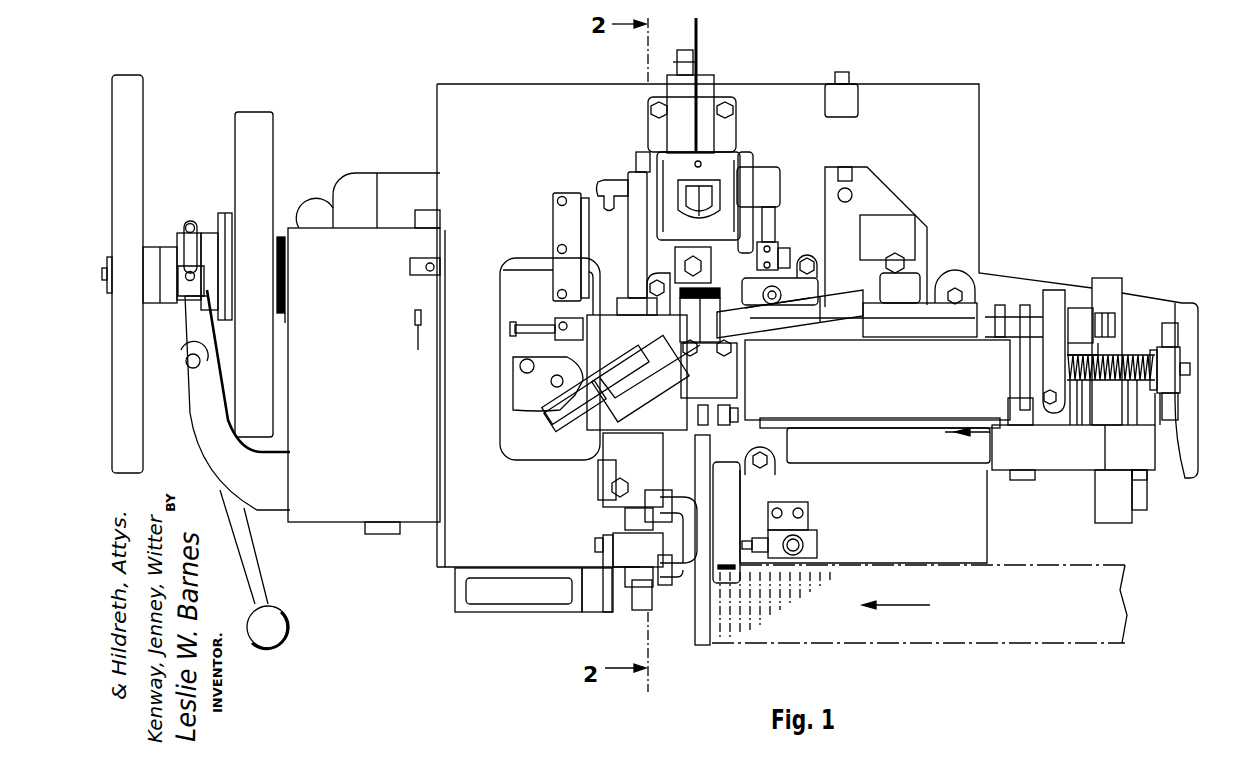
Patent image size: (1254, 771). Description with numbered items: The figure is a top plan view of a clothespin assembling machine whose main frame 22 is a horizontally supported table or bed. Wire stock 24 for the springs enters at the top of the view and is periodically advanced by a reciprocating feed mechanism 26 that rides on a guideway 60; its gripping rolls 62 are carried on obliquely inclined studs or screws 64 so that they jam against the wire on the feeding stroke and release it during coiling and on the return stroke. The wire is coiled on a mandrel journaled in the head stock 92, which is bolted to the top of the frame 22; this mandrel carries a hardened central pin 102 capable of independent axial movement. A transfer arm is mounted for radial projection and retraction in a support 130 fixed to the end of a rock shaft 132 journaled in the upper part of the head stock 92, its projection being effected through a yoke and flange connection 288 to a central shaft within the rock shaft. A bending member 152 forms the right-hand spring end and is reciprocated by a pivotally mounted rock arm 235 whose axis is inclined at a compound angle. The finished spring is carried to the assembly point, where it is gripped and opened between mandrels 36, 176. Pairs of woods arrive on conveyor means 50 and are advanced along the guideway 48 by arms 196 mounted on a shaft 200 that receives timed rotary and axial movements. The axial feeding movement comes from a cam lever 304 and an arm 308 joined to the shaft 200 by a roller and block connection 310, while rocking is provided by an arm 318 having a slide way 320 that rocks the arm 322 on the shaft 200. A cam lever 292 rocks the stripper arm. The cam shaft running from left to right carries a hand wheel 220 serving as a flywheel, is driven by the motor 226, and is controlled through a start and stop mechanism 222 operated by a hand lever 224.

The main frame 22 is at (922, 107).
The wire stock 24 is at (699, 33).
The feed mechanism 26 is at (726, 171).
The mandrel 36 is at (738, 414).
The guideway 48 is at (694, 504).
The conveyor means 50 is at (745, 648).
The guideway 60 is at (715, 78).
The gripping rolls 62 is at (699, 210).
The obliquely inclined studs or screws 64 is at (698, 196).
The head stock 92 is at (895, 387).
The central pin 102 is at (1033, 312).
The support 130 is at (727, 384).
The rock shaft 132 is at (668, 375).
The bending member 152 is at (600, 392).
The mandrel 176 is at (697, 417).
The arms 196 is at (900, 459).
The shaft 200 is at (632, 247).
The hand wheel 220 is at (137, 94).
The start and stop mechanism 222 is at (207, 224).
The hand lever 224 is at (258, 588).
The motor 226 is at (357, 176).
The rock arm 235 is at (514, 397).
The yoke and flange connection 288 is at (1181, 354).
The cam lever 292 is at (1146, 483).
The cam lever 304 is at (437, 555).
The arm 308 is at (603, 553).
The roller and block connection 310 is at (622, 530).
The arm 318 is at (529, 258).
The slide way 320 is at (557, 220).
The arm 322 is at (604, 185).